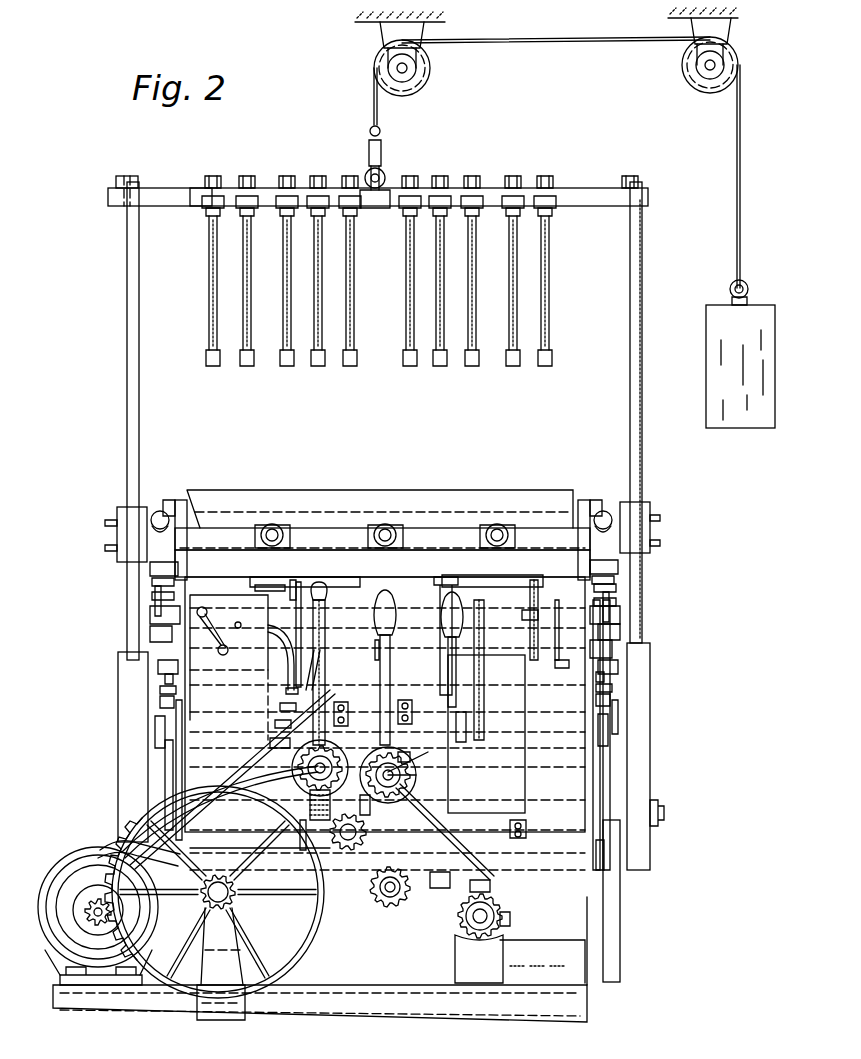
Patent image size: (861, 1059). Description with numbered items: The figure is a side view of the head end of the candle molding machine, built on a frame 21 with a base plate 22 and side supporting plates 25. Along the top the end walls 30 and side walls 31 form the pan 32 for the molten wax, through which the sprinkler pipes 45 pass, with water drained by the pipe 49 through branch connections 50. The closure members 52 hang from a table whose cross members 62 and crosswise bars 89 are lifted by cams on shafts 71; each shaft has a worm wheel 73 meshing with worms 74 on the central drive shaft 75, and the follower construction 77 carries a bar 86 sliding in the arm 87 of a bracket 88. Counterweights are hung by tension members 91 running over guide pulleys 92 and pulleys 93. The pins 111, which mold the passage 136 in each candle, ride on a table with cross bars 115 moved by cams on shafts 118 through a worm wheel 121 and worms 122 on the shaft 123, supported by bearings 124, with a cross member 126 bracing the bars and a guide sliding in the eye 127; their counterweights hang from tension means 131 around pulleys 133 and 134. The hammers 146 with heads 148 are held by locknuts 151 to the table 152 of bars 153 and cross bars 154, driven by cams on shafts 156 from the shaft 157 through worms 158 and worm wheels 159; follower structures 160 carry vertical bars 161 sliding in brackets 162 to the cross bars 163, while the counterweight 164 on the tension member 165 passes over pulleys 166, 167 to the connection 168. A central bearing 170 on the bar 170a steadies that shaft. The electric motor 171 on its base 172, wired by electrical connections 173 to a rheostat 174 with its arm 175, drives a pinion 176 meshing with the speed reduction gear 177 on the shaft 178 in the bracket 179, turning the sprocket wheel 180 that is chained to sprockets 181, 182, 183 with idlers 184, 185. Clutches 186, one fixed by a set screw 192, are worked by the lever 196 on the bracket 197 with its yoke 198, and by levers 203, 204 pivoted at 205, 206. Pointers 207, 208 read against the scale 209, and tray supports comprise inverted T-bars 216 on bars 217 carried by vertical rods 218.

The frame 21 is at (432, 1026).
The base plate 22 is at (404, 975).
The supporting plates 25 is at (176, 772).
The end walls 30 is at (500, 480).
The side walls 31 is at (185, 500).
The pan 32 is at (432, 490).
The sprinkler pipes 45 is at (275, 524).
The drain pipe 49 is at (160, 511).
The branch connections 50 is at (170, 500).
The closure members 52 is at (300, 577).
The cross members 62 is at (270, 585).
The shafts 71 is at (618, 718).
The worm wheel 73 is at (374, 630).
The worms 74 is at (404, 794).
The central drive shaft 75 is at (416, 775).
The follower construction 77 is at (160, 692).
The bar 86 is at (158, 666).
The arm 87 is at (150, 634).
The bracket 88 is at (200, 690).
The crosswise bars 89 is at (150, 614).
The tension members 91 is at (155, 600).
The guide pulleys 92 is at (165, 680).
The pulleys 93 is at (150, 569).
The pins 111 is at (305, 662).
The cross bars 115 is at (316, 660).
The shafts 118 is at (604, 855).
The worm wheel 121 is at (440, 880).
The worms 122 is at (462, 930).
The shaft 123 is at (620, 940).
The bearings 124 is at (165, 780).
The cross member 126 is at (160, 702).
The eye 127 is at (155, 730).
The tension means 131 is at (448, 650).
The pulleys 133 is at (280, 708).
The pulleys 134 is at (325, 590).
The passage 136 is at (490, 886).
The hammers 146 is at (288, 288).
The head 148 is at (280, 358).
The locknuts 151 is at (513, 188).
The table 152 is at (566, 186).
The bars 153 is at (222, 198).
The cross bars 154 is at (200, 196).
The shafts 156 is at (664, 813).
The shaft 157 is at (275, 724).
The worms 158 is at (300, 830).
The worm wheels 159 is at (300, 848).
The follower structures 160 is at (118, 656).
The vertical bars 161 is at (127, 412).
The brackets 162 is at (117, 520).
The cross bars 163 is at (108, 198).
The counterweight 164 is at (706, 362).
The tension member 165 is at (736, 230).
The pulley 166 is at (703, 92).
The pulley 167 is at (430, 68).
The connection point 168 is at (383, 172).
The central bearing 170 is at (260, 795).
The bar 170a is at (300, 748).
The electric motor 171 is at (50, 888).
The base 172 is at (100, 1000).
The electrical connections 173 is at (110, 845).
The rheostat 174 is at (280, 662).
The arm 175 is at (226, 648).
The pinion 176 is at (90, 916).
The speed reduction gear 177 is at (150, 975).
The shaft 178 is at (228, 928).
The bracket 179 is at (240, 1020).
The sprocket wheel 180 is at (232, 900).
The sprocket 181 is at (404, 752).
The sprocket 182 is at (470, 940).
The sprocket 183 is at (330, 800).
The idler 184 is at (364, 840).
The idler 185 is at (400, 900).
The clutches 186 is at (355, 742).
The set screw 192 is at (370, 805).
The lever 196 is at (296, 590).
The bracket 197 is at (350, 690).
The yoke 198 is at (276, 806).
The lever 203 is at (392, 655).
The lever 204 is at (484, 664).
The pivot 205 is at (410, 700).
The pivot 206 is at (520, 820).
The pointer 207 is at (538, 614).
The pointer 208 is at (589, 666).
The scale 209 is at (538, 650).
The inverted T-bars 216 is at (614, 580).
The bars 217 is at (152, 583).
The vertical rods 218 is at (152, 597).